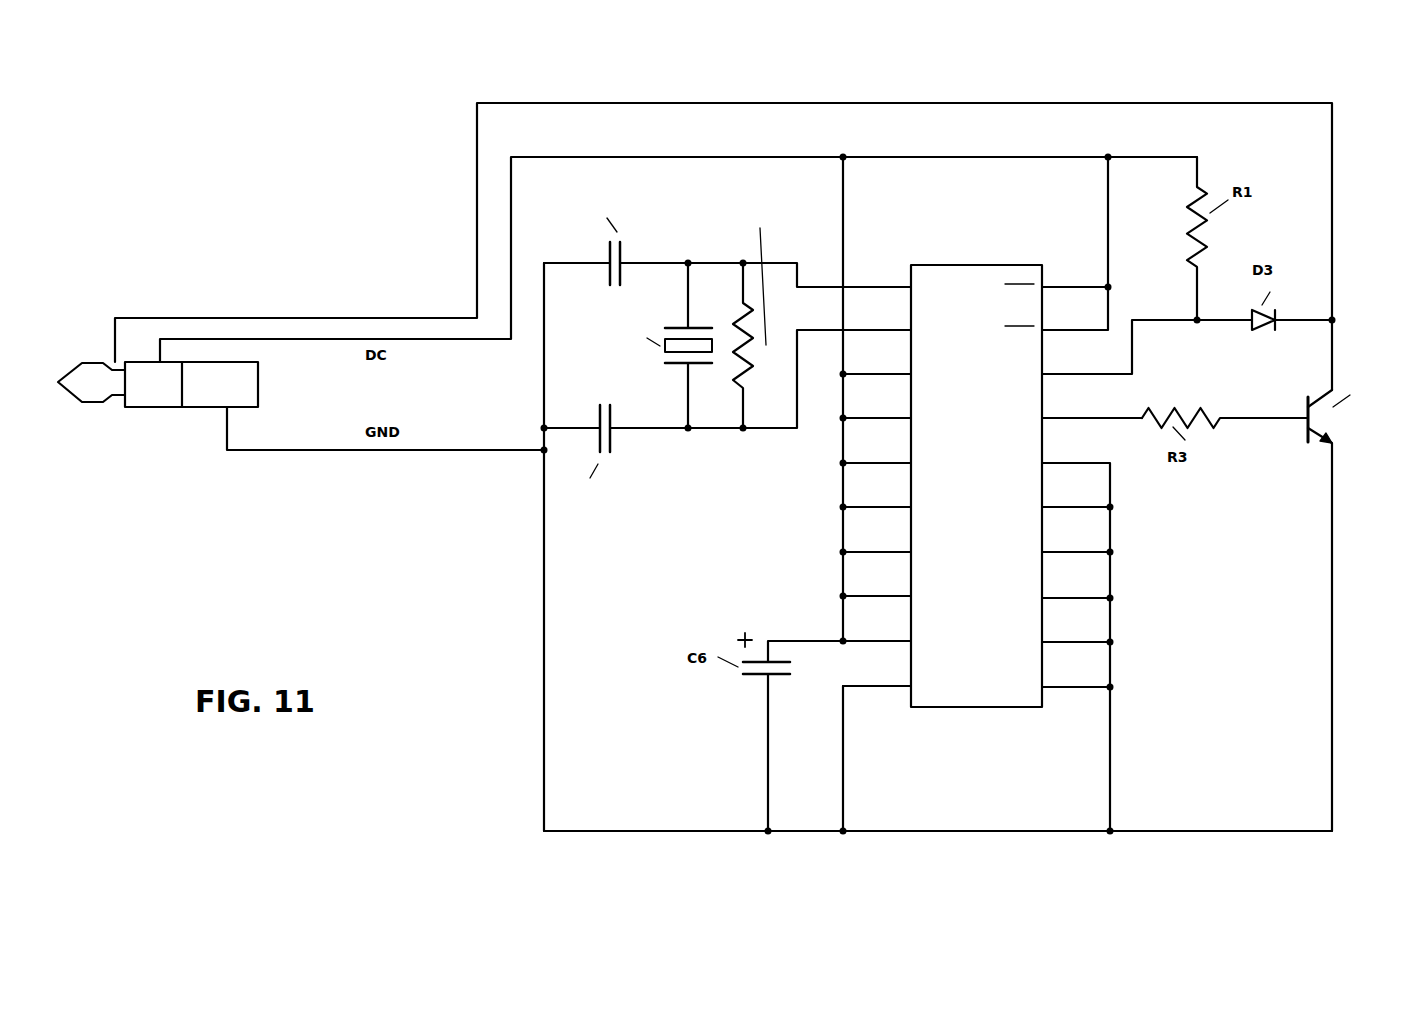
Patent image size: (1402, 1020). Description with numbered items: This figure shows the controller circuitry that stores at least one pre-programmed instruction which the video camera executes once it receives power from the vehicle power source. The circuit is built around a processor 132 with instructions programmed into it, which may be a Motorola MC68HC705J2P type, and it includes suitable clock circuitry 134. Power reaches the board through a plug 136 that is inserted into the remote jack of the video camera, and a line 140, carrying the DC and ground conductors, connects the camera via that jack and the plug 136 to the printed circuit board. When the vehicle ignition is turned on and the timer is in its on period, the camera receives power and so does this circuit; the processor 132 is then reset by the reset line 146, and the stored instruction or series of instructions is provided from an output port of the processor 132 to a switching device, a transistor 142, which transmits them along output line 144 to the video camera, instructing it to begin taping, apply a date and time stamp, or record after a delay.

The processor 132 is at (990, 712).
The clock circuitry 134 is at (722, 442).
The plug 136 is at (122, 420).
The line 140 is at (328, 450).
The transistor 142 is at (1323, 423).
The line 144 is at (842, 103).
The reset line 146 is at (1110, 217).